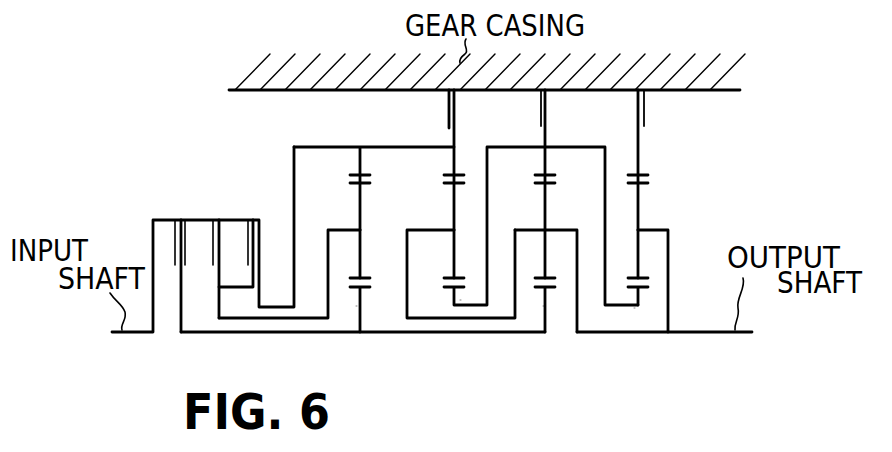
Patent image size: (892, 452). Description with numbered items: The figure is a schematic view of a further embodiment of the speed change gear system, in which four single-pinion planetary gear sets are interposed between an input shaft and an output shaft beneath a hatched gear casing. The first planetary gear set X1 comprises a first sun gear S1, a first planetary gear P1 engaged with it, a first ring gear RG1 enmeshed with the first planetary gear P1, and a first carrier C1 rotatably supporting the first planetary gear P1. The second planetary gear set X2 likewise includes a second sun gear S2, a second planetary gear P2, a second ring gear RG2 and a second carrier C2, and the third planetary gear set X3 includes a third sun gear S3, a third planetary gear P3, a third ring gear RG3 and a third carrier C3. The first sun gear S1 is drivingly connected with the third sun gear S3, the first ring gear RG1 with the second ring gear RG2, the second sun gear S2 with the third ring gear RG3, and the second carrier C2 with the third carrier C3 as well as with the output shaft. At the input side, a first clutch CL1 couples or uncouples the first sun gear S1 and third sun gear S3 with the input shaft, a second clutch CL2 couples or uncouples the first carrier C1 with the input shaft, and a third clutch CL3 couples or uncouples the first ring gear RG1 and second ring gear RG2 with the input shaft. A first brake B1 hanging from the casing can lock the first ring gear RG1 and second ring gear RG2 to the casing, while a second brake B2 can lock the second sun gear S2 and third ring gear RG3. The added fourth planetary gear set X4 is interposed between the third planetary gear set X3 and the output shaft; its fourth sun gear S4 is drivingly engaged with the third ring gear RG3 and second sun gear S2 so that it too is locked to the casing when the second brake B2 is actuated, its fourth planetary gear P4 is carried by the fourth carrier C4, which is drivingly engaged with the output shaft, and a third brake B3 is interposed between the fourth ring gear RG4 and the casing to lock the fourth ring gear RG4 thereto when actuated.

The first clutch CL1 is at (184, 219).
The second clutch CL2 is at (222, 219).
The third clutch CL3 is at (264, 220).
The first brake B1 is at (447, 108).
The second brake B2 is at (541, 105).
The third brake B3 is at (637, 105).
The first ring gear RG1 is at (363, 162).
The second ring gear RG2 is at (457, 152).
The third ring gear RG3 is at (548, 162).
The fourth ring gear RG4 is at (641, 160).
The first carrier C1 is at (361, 231).
The second carrier C2 is at (455, 231).
The third carrier C3 is at (546, 231).
The fourth carrier C4 is at (632, 231).
The first planetary gear P1 is at (362, 259).
The second planetary gear P2 is at (452, 250).
The third planetary gear P3 is at (557, 264).
The fourth planetary gear P4 is at (640, 255).
The first sun gear S1 is at (363, 305).
The second sun gear S2 is at (452, 302).
The third sun gear S3 is at (547, 311).
The fourth sun gear S4 is at (640, 299).
The first planetary gear set X1 is at (354, 307).
The second planetary gear set X2 is at (461, 297).
The third planetary gear set X3 is at (542, 307).
The fourth planetary gear set X4 is at (633, 309).